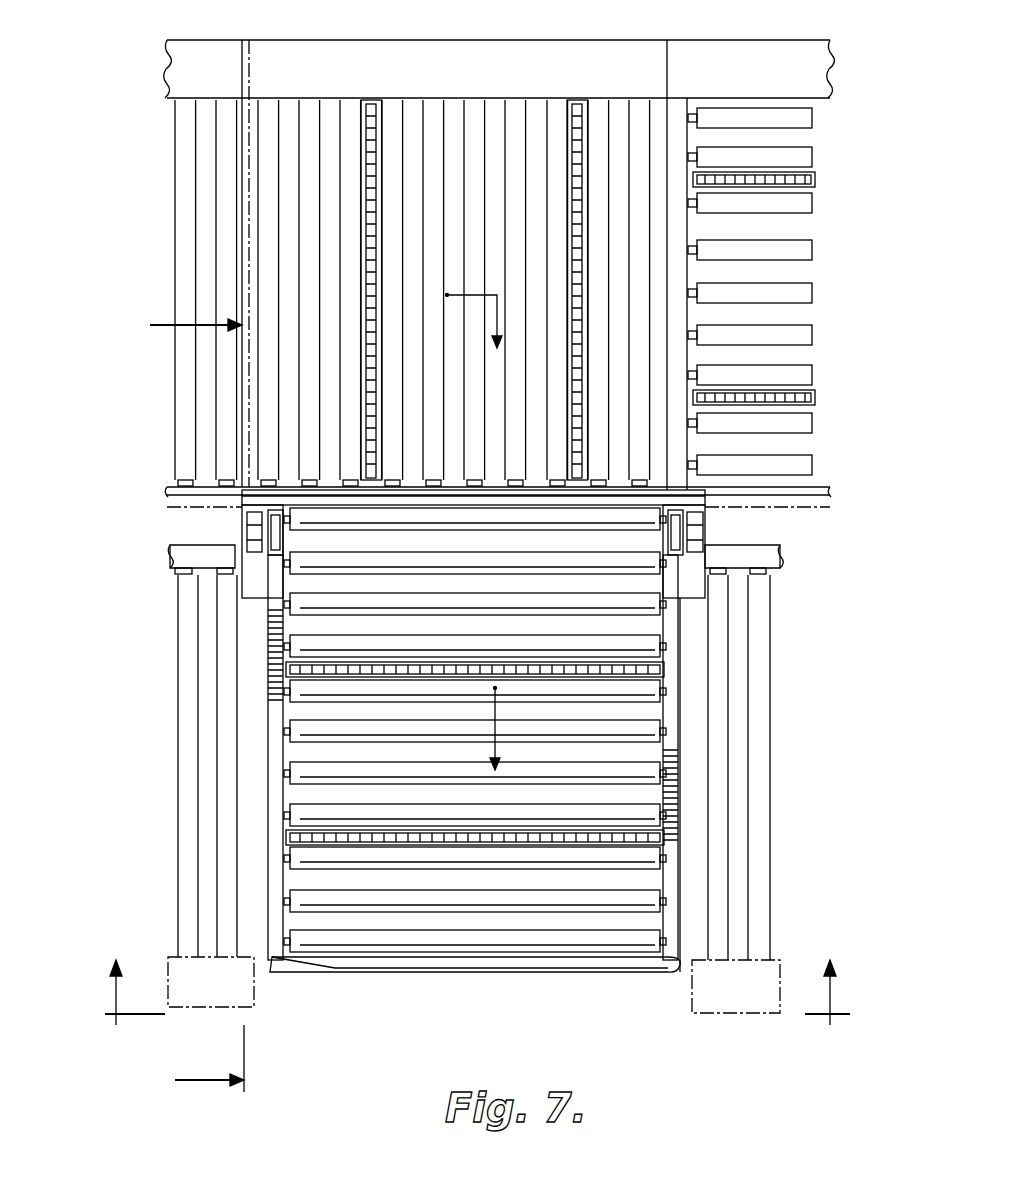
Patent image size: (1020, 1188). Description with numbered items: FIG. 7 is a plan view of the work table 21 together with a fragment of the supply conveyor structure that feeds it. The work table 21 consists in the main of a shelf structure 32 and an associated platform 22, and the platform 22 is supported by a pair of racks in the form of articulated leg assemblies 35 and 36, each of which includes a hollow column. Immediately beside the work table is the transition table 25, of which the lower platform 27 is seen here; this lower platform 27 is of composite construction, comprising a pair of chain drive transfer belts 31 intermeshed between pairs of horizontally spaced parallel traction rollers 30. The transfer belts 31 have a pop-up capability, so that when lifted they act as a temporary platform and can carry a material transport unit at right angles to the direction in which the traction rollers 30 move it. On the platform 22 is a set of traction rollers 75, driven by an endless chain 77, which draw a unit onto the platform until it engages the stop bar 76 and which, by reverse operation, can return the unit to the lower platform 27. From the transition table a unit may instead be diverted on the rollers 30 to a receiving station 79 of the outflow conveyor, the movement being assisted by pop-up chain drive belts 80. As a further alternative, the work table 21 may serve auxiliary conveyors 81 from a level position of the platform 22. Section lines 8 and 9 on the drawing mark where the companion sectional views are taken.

The section line 8- 8 is at (477, 975).
The section line 9- 9 is at (183, 580).
The work table 21 is at (474, 768).
The platform 22 is at (668, 915).
The transition table 25 is at (381, 244).
The lower platform 27 is at (170, 140).
The traction rollers 30 is at (493, 123).
The chain drive transfer belts 31 is at (370, 104).
The shelf structure 32 is at (270, 886).
The articulated leg assembly 35 is at (705, 523).
The articulated leg assembly 36 is at (242, 525).
The traction rollers 75 is at (455, 895).
The stop bar 76 is at (385, 972).
The endless chain 77 is at (665, 672).
The receiving station 79 is at (775, 313).
The pop-up chain drive belts 80 is at (798, 181).
The auxiliary conveyors 81 is at (190, 648).